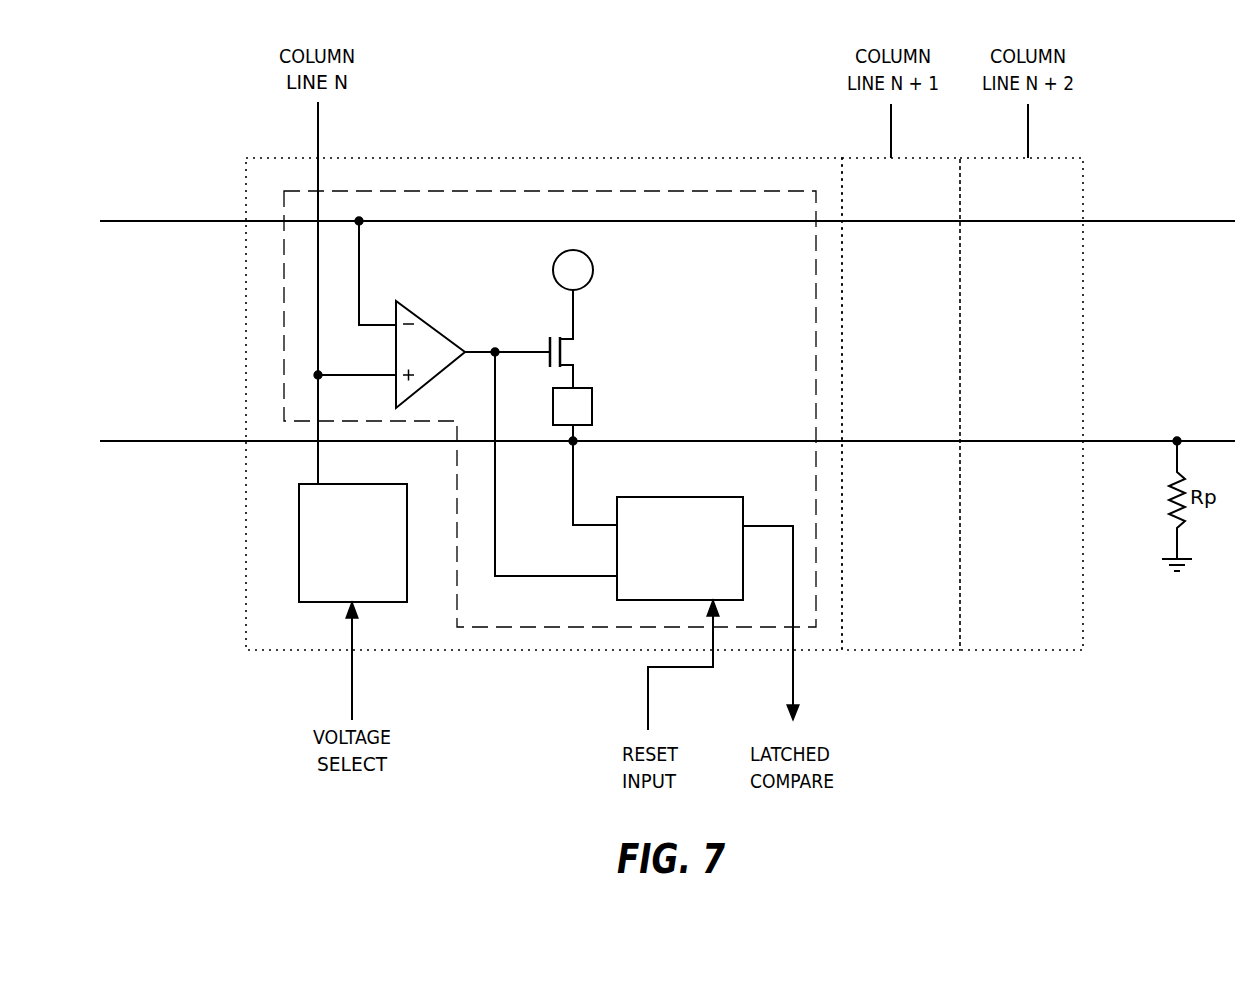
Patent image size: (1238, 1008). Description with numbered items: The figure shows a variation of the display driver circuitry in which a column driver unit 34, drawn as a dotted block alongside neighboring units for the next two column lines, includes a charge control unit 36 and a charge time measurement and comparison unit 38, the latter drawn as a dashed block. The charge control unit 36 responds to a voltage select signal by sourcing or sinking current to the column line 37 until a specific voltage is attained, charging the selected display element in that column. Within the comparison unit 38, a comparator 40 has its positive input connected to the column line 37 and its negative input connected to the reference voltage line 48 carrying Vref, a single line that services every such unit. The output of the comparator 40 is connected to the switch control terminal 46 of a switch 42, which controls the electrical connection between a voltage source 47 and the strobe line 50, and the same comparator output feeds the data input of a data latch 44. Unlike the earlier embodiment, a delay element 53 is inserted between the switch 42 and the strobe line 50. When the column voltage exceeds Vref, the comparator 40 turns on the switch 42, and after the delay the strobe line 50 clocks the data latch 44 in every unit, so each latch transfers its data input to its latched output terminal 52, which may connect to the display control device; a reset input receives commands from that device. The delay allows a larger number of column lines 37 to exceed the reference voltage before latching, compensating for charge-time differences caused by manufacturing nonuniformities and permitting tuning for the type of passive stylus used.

The column driver unit 34 is at (246, 170).
The charge control unit 36 is at (299, 577).
The column line 37 is at (318, 116).
The charge time measurement and comparison unit 38 is at (666, 191).
The comparator 40 is at (428, 320).
The switch 42 is at (561, 353).
The data latch 44 is at (685, 497).
The switch control terminal 46 is at (525, 350).
The voltage source 47 is at (593, 266).
The reference voltage line 48 is at (142, 222).
The strobe line 50 is at (142, 442).
The latched output terminal 52 is at (765, 520).
The delay element 53 is at (592, 403).